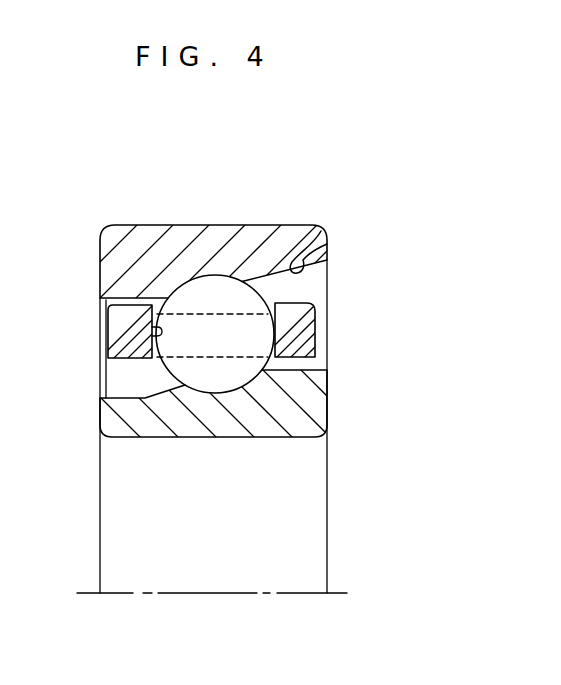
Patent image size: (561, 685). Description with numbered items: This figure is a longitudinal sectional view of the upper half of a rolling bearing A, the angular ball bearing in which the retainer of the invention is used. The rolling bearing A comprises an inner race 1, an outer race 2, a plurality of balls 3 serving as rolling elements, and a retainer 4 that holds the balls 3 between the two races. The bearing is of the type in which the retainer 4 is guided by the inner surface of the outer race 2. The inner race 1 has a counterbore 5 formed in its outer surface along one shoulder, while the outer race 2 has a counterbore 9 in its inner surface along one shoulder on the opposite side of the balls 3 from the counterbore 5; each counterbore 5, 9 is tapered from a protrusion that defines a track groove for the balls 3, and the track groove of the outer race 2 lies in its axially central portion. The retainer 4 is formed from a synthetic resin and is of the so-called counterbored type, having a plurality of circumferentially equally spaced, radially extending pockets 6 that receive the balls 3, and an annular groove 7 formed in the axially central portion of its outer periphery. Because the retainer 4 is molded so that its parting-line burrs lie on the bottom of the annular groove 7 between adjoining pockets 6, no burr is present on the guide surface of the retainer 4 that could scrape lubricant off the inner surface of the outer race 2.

The inner race 1 is at (222, 433).
The outer race 2 is at (158, 226).
The balls 3 is at (228, 287).
The retainer 4 is at (306, 332).
The counterbore 5 is at (145, 397).
The pockets 6 is at (152, 331).
The annular groove 7 is at (236, 313).
The counterbore 9 is at (322, 233).
The rolling bearing A is at (343, 202).